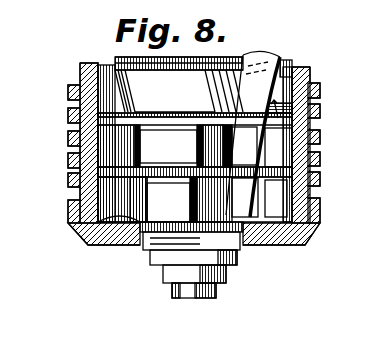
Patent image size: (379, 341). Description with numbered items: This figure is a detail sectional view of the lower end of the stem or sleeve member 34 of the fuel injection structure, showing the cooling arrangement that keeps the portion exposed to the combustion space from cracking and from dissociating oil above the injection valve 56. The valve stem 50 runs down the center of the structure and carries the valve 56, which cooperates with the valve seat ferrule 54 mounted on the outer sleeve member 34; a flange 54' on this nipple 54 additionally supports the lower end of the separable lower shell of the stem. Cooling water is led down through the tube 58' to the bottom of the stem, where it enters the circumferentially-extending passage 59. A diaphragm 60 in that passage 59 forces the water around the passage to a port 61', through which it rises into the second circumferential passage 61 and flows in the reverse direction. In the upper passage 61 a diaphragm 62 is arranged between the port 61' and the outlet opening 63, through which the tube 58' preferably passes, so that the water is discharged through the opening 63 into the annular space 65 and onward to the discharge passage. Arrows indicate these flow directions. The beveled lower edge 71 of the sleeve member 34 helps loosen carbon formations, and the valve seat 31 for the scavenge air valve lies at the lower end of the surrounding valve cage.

The annular space 65 is at (78, 80).
The second circumferential passage 61 is at (79, 143).
The diaphragm 62 is at (216, 139).
The port 61' is at (173, 199).
The tube 58' is at (277, 117).
The outlet opening 63 is at (277, 107).
The valve seat 31 is at (320, 158).
The sleeve member 34 is at (320, 188).
The beveled edge 71 is at (80, 239).
The circumferential passage 59 is at (115, 226).
The valve seat ferrule 54 is at (172, 270).
The diaphragm 60 is at (234, 244).
The flange 54' is at (227, 298).
The valve 56 is at (203, 292).
The valve stem 50 is at (351, 320).